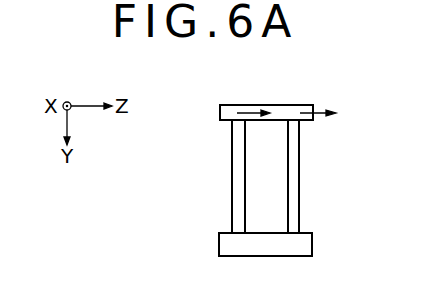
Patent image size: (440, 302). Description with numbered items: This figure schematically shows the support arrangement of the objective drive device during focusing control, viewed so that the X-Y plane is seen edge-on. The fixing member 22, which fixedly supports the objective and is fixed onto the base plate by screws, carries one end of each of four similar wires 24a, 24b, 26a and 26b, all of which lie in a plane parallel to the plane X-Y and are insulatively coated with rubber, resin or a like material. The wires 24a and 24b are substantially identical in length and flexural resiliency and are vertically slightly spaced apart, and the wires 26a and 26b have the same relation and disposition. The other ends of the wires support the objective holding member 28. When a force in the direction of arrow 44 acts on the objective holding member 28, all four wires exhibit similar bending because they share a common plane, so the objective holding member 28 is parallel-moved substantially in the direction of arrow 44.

The fixing member 22 is at (312, 245).
The wire 24a is at (300, 170).
The wire 24b is at (289, 200).
The wire 26a is at (245, 156).
The wire 26b is at (232, 202).
The objective holding member 28 is at (273, 105).
The arrow 44 is at (306, 119).